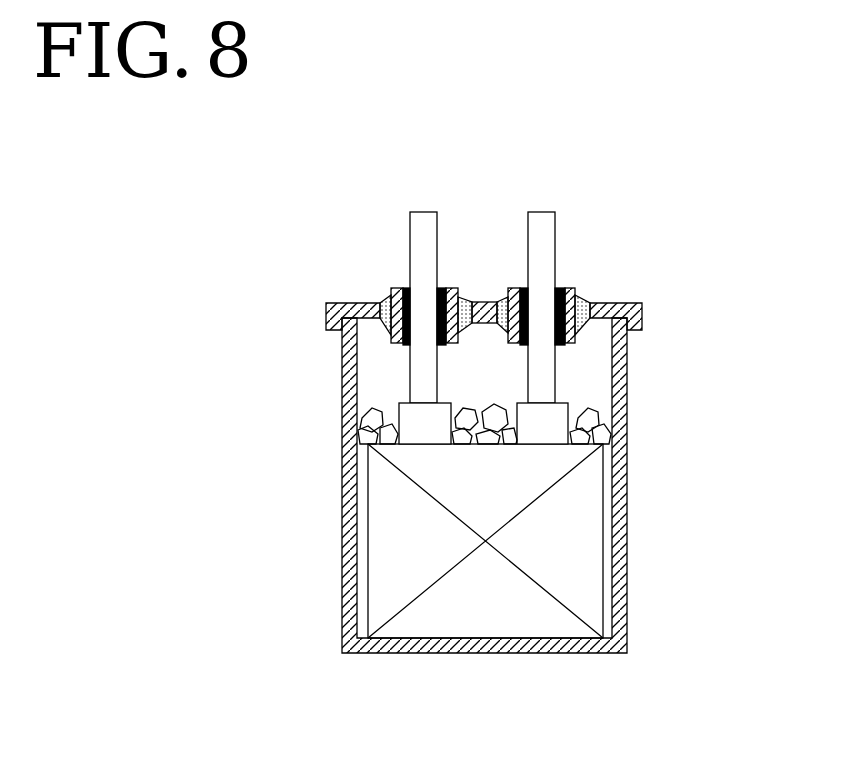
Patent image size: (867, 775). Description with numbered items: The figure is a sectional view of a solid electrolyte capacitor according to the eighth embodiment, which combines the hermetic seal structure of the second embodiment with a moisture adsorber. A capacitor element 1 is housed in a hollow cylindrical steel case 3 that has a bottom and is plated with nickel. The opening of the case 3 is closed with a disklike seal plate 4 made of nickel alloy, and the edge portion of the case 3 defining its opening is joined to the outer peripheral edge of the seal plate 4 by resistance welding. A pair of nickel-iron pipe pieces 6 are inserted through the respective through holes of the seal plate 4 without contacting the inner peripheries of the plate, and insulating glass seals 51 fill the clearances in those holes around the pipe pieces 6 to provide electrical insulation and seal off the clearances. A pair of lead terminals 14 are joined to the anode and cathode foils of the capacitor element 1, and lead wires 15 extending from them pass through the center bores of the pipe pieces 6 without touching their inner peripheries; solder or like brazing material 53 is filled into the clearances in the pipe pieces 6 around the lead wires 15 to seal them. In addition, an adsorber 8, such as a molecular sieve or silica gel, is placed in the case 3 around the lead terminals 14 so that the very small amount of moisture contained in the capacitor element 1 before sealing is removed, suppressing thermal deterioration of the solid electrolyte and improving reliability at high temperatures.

The capacitor element 1 is at (593, 568).
The case 3 is at (627, 485).
The seal plate 4 is at (617, 303).
The pipe piece 6 is at (397, 287).
The adsorber 8 is at (363, 432).
The lead terminal 14 is at (398, 407).
The lead wire 15 is at (413, 247).
The insulating glass seal 51 is at (382, 303).
The brazing material 53 is at (439, 286).